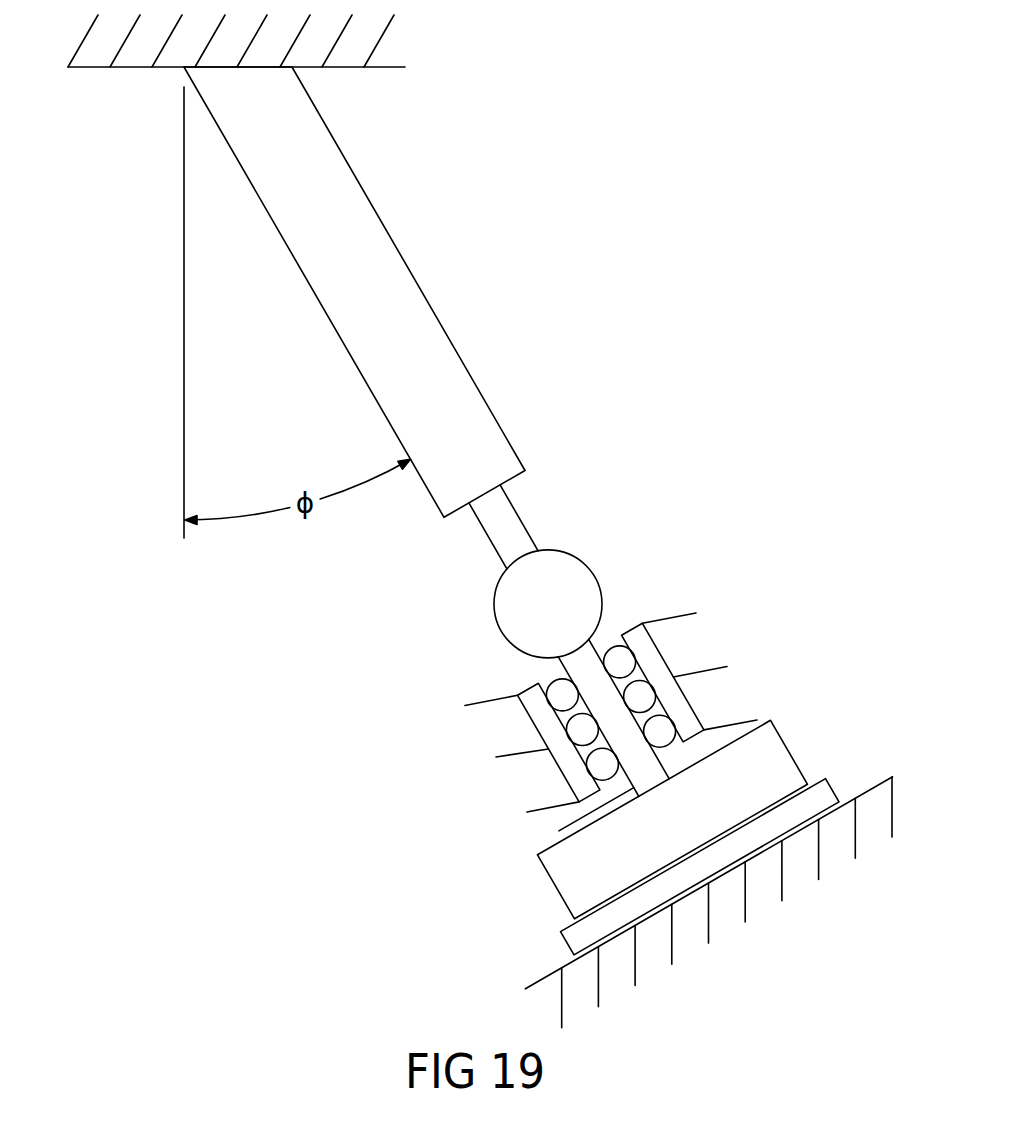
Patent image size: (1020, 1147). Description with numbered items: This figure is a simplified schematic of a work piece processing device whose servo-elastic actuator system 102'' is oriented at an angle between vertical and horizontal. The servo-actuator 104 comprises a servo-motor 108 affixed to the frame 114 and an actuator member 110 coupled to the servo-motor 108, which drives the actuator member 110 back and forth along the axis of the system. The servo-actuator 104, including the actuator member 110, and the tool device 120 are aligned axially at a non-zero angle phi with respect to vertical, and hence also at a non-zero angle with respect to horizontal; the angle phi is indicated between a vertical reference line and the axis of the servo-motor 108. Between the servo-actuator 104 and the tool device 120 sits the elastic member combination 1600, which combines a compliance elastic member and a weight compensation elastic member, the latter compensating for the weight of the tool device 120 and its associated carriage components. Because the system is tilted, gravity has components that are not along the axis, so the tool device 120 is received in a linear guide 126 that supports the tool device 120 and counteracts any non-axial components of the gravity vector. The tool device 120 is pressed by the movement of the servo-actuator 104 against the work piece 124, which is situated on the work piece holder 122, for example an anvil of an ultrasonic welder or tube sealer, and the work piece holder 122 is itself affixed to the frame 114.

The frame 114 is at (93, 69).
The servo-actuator 104 is at (410, 198).
The servo-elastic actuator system 102'' is at (551, 511).
The servo-motor 108 is at (410, 270).
The actuator member 110 is at (520, 517).
The elastic member combination 1600 is at (483, 604).
The linear guide 126 is at (528, 671).
The tool device 120 is at (560, 832).
The work piece 124 is at (801, 746).
The work piece holder 122 is at (837, 791).